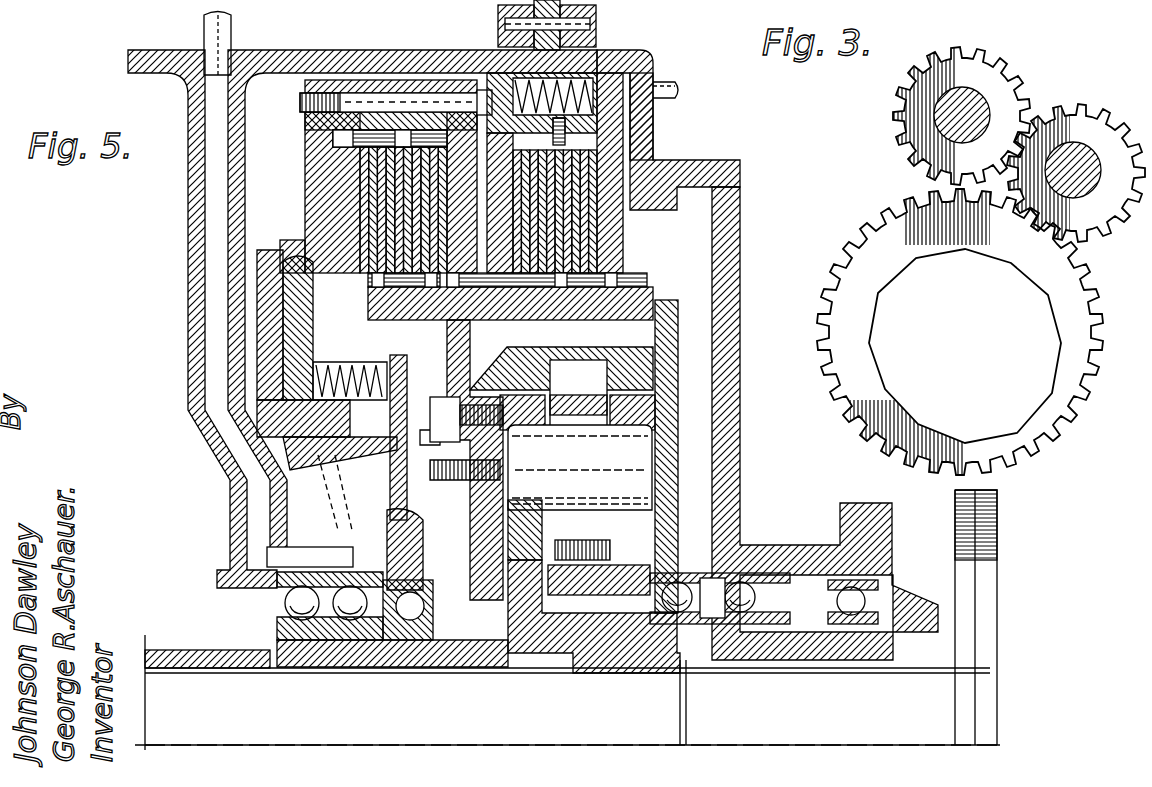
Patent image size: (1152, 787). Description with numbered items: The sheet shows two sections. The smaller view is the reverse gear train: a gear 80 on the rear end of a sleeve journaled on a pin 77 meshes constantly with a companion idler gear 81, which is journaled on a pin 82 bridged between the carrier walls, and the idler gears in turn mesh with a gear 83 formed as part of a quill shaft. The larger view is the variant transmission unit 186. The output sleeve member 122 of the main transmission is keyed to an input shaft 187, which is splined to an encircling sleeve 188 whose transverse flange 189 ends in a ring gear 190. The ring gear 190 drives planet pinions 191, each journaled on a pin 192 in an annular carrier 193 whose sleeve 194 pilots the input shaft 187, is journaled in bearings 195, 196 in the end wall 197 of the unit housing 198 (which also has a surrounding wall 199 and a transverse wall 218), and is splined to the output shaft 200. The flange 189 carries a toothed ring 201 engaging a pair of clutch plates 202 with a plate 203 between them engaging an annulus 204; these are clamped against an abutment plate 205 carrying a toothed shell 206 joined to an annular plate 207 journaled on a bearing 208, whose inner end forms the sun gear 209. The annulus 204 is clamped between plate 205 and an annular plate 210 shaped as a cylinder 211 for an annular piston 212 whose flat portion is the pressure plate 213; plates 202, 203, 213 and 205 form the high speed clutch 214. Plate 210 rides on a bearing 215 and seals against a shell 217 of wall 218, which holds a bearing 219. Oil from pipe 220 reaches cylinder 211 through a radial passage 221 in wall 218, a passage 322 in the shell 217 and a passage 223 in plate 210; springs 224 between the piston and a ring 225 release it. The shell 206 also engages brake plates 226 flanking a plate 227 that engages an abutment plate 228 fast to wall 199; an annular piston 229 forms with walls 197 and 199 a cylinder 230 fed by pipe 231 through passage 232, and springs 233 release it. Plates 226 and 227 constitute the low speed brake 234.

In FIG. 3, the pin 77 is at (980, 95).
In FIG. 3, the gear 80 is at (956, 52).
In FIG. 3, the idler gear 81 is at (1076, 160).
In FIG. 3, the pin 82 is at (1090, 150).
In FIG. 3, the gear 83 is at (1070, 425).
In FIG. 5, the output sleeve member 122 is at (205, 638).
In FIG. 5, the transmission unit 186 is at (174, 217).
In FIG. 5, the input shaft 187 is at (318, 716).
In FIG. 5, the sleeve 188 is at (405, 650).
In FIG. 5, the flange 189 is at (470, 490).
In FIG. 5, the ring gear 190 is at (588, 360).
In FIG. 5, the planet pinions 191 is at (577, 403).
In FIG. 5, the pin 192 is at (595, 468).
In FIG. 5, the carrier 193 is at (525, 530).
In FIG. 5, the sleeve 194 is at (605, 643).
In FIG. 5, the bearing 195 is at (745, 590).
In FIG. 5, the bearing 196 is at (872, 600).
In FIG. 5, the end wall 197 is at (738, 468).
In FIG. 5, the unit housing 198 is at (280, 36).
In FIG. 5, the surrounding wall 199 is at (362, 50).
In FIG. 5, the output shaft 200 is at (840, 700).
In FIG. 5, the annular ring 201 is at (510, 314).
In FIG. 5, the clutch plates 202 is at (410, 296).
In FIG. 5, the clutch plate 203 is at (390, 138).
In FIG. 5, the annulus 204 is at (410, 85).
In FIG. 5, the abutment plate 205 is at (470, 190).
In FIG. 5, the annular shell 206 is at (545, 322).
In FIG. 5, the annular plate 207 is at (675, 410).
In FIG. 5, the bearing 208 is at (665, 640).
In FIG. 5, the sun gear 209 is at (605, 588).
In FIG. 5, the annular plate 210 is at (300, 240).
In FIG. 5, the annular cylinder 211 is at (280, 304).
In FIG. 5, the annular piston 212 is at (311, 327).
In FIG. 5, the pressure plate 213 is at (348, 185).
In FIG. 5, the clutch 214 is at (297, 153).
In FIG. 5, the bearing 215 is at (440, 655).
In FIG. 5, the shell 217 is at (390, 560).
In FIG. 5, the transverse wall 218 is at (190, 354).
In FIG. 5, the bearing 219 is at (350, 640).
In FIG. 5, the pipe 220 is at (204, 27).
In FIG. 5, the passage 221 is at (230, 262).
In FIG. 5, the passage 223 is at (330, 470).
In FIG. 5, the springs 224 is at (372, 362).
In FIG. 5, the ring 225 is at (411, 437).
In FIG. 5, the annular plates 226 is at (600, 286).
In FIG. 5, the plate 227 is at (567, 135).
In FIG. 5, the abutment plate 228 is at (498, 199).
In FIG. 5, the annular piston 229 is at (640, 209).
In FIG. 5, the annular cylinder 230 is at (625, 155).
In FIG. 5, the pipe 231 is at (672, 84).
In FIG. 5, the passage 232 is at (645, 56).
In FIG. 5, the springs 233 is at (592, 60).
In FIG. 5, the low speed brake 234 is at (637, 248).
In FIG. 5, the spacer 322 is at (310, 557).